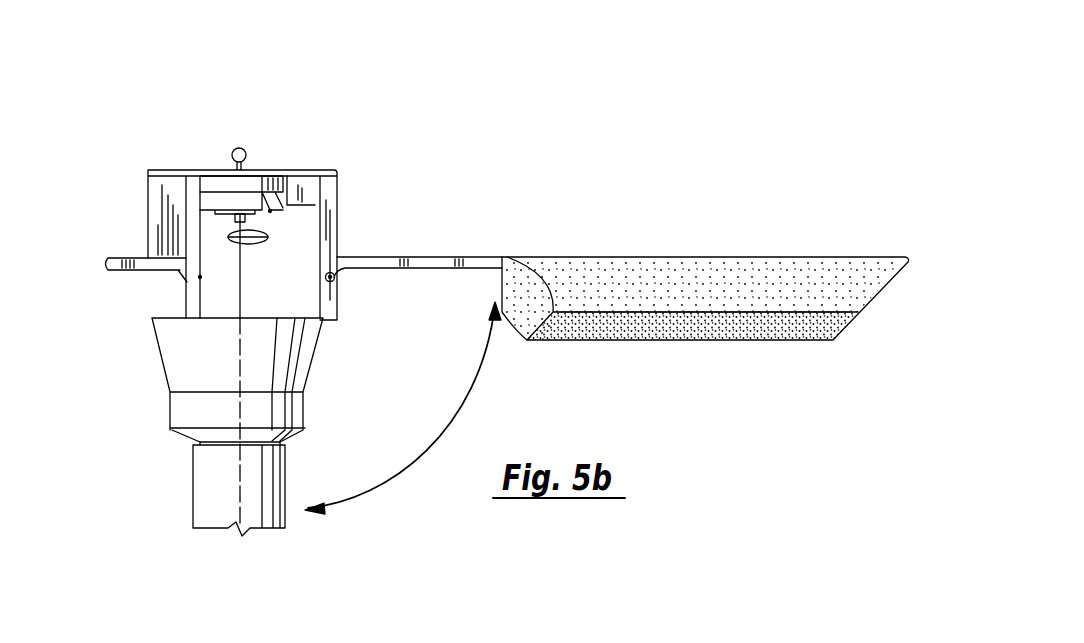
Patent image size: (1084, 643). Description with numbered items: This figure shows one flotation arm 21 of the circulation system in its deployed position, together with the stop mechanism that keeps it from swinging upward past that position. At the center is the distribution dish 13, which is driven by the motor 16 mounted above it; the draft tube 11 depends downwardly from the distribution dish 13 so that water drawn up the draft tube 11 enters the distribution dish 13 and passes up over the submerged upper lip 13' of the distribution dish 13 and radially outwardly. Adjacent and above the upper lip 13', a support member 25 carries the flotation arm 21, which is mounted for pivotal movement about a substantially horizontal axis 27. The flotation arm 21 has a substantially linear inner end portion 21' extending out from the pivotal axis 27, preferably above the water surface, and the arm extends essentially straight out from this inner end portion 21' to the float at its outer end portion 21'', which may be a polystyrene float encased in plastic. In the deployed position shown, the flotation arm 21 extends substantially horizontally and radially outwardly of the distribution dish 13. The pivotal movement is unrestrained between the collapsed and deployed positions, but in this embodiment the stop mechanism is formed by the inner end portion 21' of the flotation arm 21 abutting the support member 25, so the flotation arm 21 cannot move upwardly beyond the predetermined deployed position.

The draft tube 11 is at (285, 477).
The distribution dish 13 is at (196, 380).
The upper lip of the distribution dish 13' is at (279, 352).
The motor 16 is at (222, 182).
The flotation arm 21 is at (705, 246).
The inner end portion of the flotation arm 21' is at (418, 293).
The outer end portion of the flotation arm 21'' is at (705, 246).
The support member 25 is at (332, 192).
The horizontal axis 27 is at (328, 273).